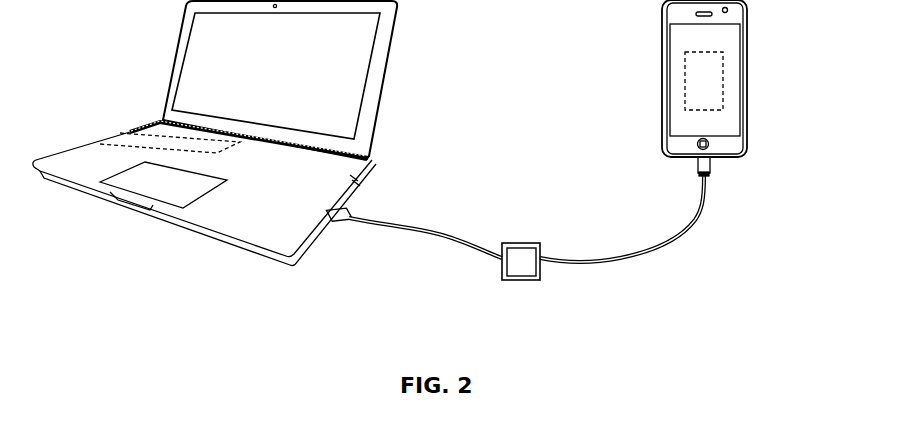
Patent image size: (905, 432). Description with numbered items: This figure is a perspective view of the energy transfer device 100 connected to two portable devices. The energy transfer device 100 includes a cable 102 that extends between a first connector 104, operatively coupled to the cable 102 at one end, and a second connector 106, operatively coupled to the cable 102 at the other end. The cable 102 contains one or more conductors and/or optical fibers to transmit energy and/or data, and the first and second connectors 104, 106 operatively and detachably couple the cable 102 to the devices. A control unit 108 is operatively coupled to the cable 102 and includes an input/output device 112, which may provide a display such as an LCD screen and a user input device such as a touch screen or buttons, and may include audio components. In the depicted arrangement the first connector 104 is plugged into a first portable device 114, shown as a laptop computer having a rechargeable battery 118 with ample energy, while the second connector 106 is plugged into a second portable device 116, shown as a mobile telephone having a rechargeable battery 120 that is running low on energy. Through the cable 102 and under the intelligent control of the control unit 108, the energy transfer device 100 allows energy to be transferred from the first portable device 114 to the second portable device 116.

The energy transfer device 100 is at (497, 284).
The cable 102 is at (677, 243).
The first connector 104 is at (345, 212).
The second connector 106 is at (712, 163).
The control unit 108 is at (527, 253).
The input/output device 112 is at (525, 277).
The first portable device 114 is at (388, 62).
The second portable device 116 is at (712, 78).
The rechargeable battery 118 is at (128, 133).
The rechargeable battery 120 is at (685, 82).